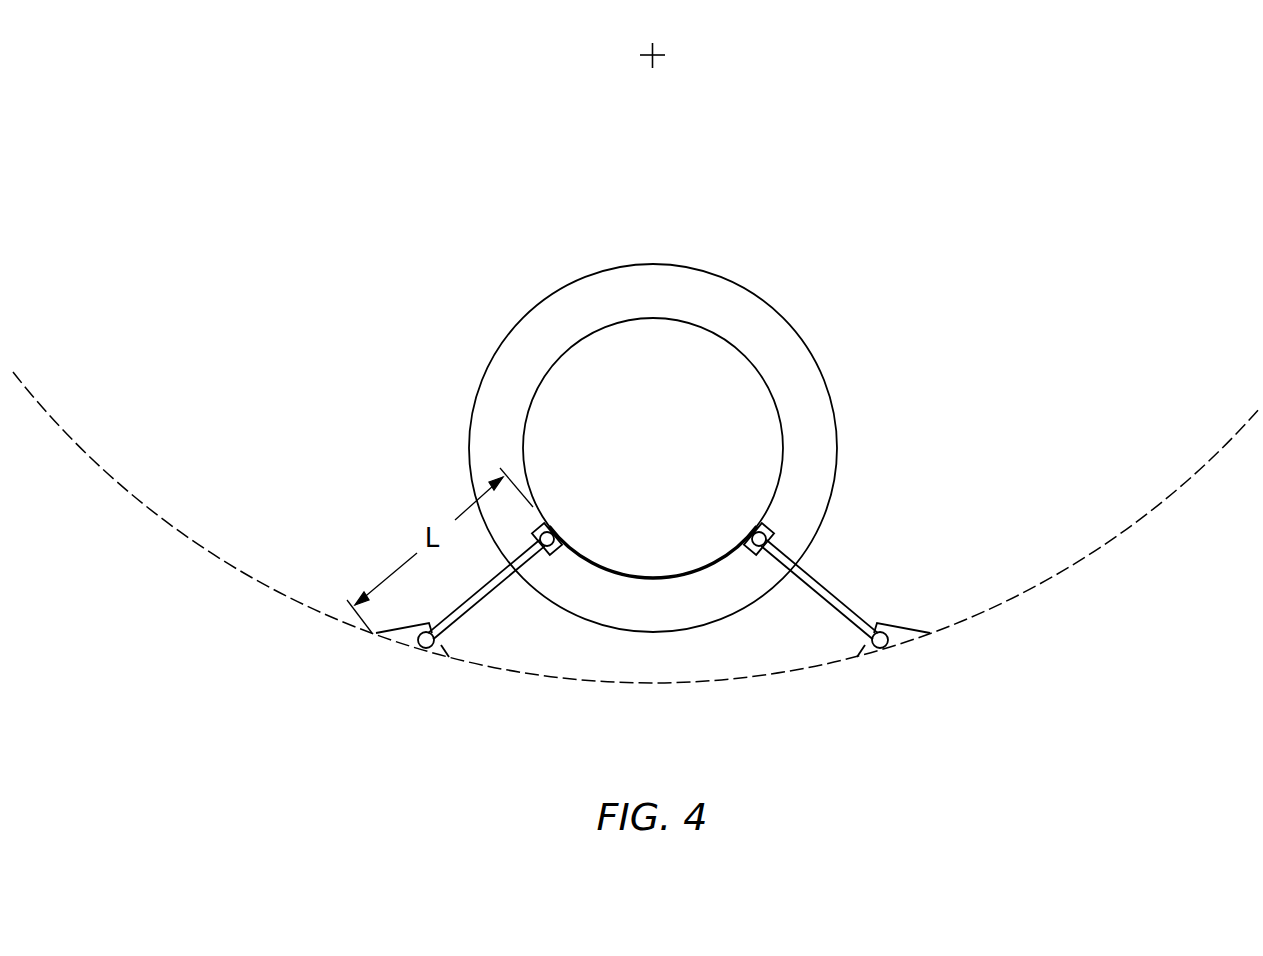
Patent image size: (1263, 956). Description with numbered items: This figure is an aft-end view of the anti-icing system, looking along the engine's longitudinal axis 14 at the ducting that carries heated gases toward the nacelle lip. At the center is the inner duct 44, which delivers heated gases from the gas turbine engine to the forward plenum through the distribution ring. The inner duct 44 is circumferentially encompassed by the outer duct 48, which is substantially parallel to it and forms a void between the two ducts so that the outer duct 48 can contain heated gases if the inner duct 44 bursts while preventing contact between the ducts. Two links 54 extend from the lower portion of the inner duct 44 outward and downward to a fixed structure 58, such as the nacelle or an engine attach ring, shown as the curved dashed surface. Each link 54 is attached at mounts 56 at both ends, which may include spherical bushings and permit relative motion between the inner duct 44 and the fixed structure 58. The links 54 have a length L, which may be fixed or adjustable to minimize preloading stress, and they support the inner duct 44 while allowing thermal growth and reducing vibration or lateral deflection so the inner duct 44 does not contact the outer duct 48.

The longitudinal axis 14 is at (650, 57).
The inner duct 44 is at (742, 352).
The outer duct 48 is at (838, 420).
The link 54 is at (830, 608).
The mount 56 is at (753, 553).
The fixed structure 58 is at (1125, 530).